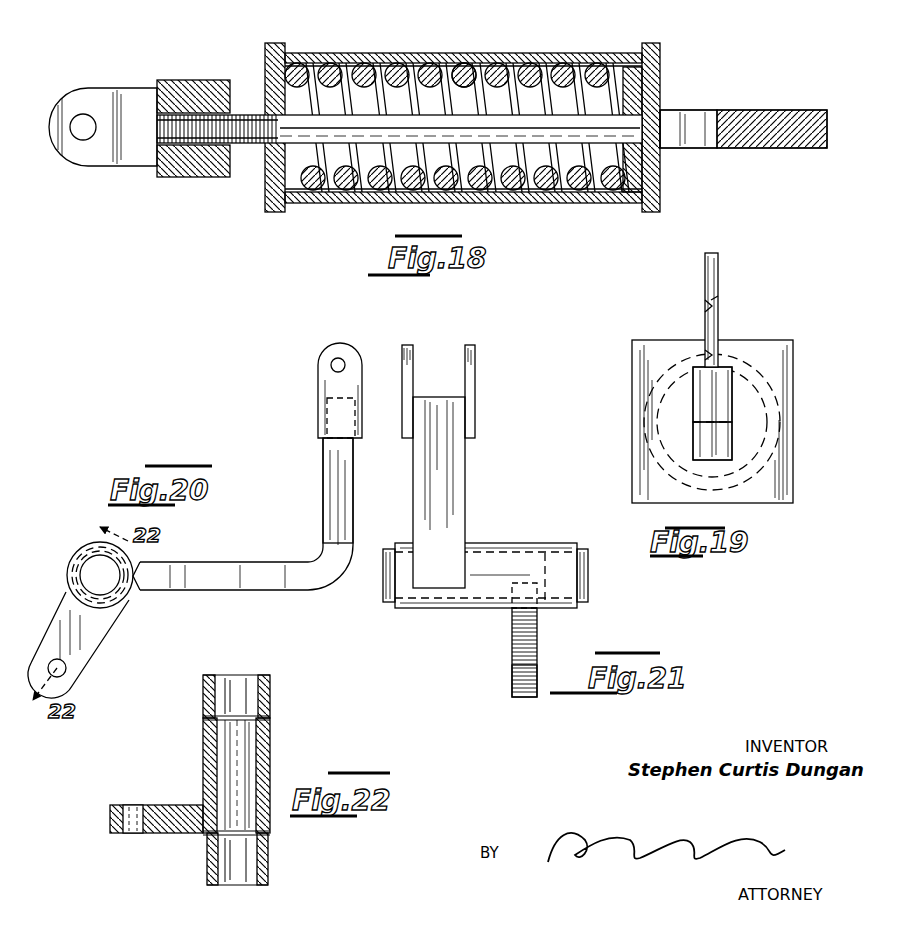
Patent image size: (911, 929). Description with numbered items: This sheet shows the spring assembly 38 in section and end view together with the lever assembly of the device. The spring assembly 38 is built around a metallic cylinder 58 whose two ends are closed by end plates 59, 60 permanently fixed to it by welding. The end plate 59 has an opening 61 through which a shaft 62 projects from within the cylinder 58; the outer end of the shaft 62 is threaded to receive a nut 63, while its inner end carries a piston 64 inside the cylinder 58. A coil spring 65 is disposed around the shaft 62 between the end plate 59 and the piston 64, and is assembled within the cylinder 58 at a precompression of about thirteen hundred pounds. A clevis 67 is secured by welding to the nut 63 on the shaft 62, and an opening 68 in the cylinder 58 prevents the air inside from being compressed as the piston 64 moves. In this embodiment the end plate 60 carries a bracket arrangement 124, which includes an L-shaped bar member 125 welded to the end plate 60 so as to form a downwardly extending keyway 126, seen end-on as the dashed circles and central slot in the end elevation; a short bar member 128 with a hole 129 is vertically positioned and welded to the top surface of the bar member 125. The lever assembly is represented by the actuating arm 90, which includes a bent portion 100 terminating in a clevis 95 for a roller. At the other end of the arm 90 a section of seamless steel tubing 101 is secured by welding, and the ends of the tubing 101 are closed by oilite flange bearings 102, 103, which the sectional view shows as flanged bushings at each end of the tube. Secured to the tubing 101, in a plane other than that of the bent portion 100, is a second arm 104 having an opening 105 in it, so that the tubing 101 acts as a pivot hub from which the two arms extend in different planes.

In FIG. 18, the spring assembly 38 is at (491, 50).
In FIG. 19, the spring assembly 38 is at (632, 392).
In FIG. 18, the metallic cylinder 58 is at (405, 58).
In FIG. 18, the end plate 59 is at (281, 48).
In FIG. 18, the end plate 60 is at (654, 46).
In FIG. 19, the end plate 60 is at (793, 478).
In FIG. 18, the opening 61 is at (262, 145).
In FIG. 18, the shaft 62 is at (247, 113).
In FIG. 18, the nut 63 is at (191, 92).
In FIG. 18, the piston 64 is at (630, 184).
In FIG. 18, the coil spring 65 is at (463, 64).
In FIG. 18, the clevis 67 is at (118, 88).
In FIG. 18, the opening 68 is at (323, 62).
In FIG. 18, the bracket arrangement 124 is at (736, 108).
In FIG. 19, the bracket arrangement 124 is at (736, 432).
In FIG. 18, the L-shaped bar member 125 is at (772, 136).
In FIG. 19, the L-shaped bar member 125 is at (700, 396).
In FIG. 18, the keyway 126 is at (704, 150).
In FIG. 19, the keyway 126 is at (693, 448).
In FIG. 19, the short bar member 128 is at (705, 305).
In FIG. 19, the hole 129 is at (719, 276).
In FIG. 20, the actuating arm 90 is at (262, 558).
In FIG. 21, the actuating arm 90 is at (408, 512).
In FIG. 20, the clevis 95 is at (320, 378).
In FIG. 21, the clevis 95 is at (475, 378).
In FIG. 20, the bent portion 100 is at (335, 512).
In FIG. 21, the bent portion 100 is at (452, 488).
In FIG. 20, the section of seamless steel tubing 101 is at (90, 545).
In FIG. 21, the section of seamless steel tubing 101 is at (510, 562).
In FIG. 22, the section of seamless steel tubing 101 is at (270, 749).
In FIG. 20, the oilite flange bearing 102 is at (82, 553).
In FIG. 21, the oilite flange bearing 102 is at (386, 588).
In FIG. 22, the oilite flange bearing 102 is at (257, 676).
In FIG. 21, the oilite flange bearing 103 is at (588, 592).
In FIG. 22, the oilite flange bearing 103 is at (258, 882).
In FIG. 20, the second arm 104 is at (62, 605).
In FIG. 21, the second arm 104 is at (515, 645).
In FIG. 22, the second arm 104 is at (172, 821).
In FIG. 20, the opening 105 is at (72, 676).
In FIG. 21, the opening 105 is at (510, 672).
In FIG. 22, the opening 105 is at (140, 806).